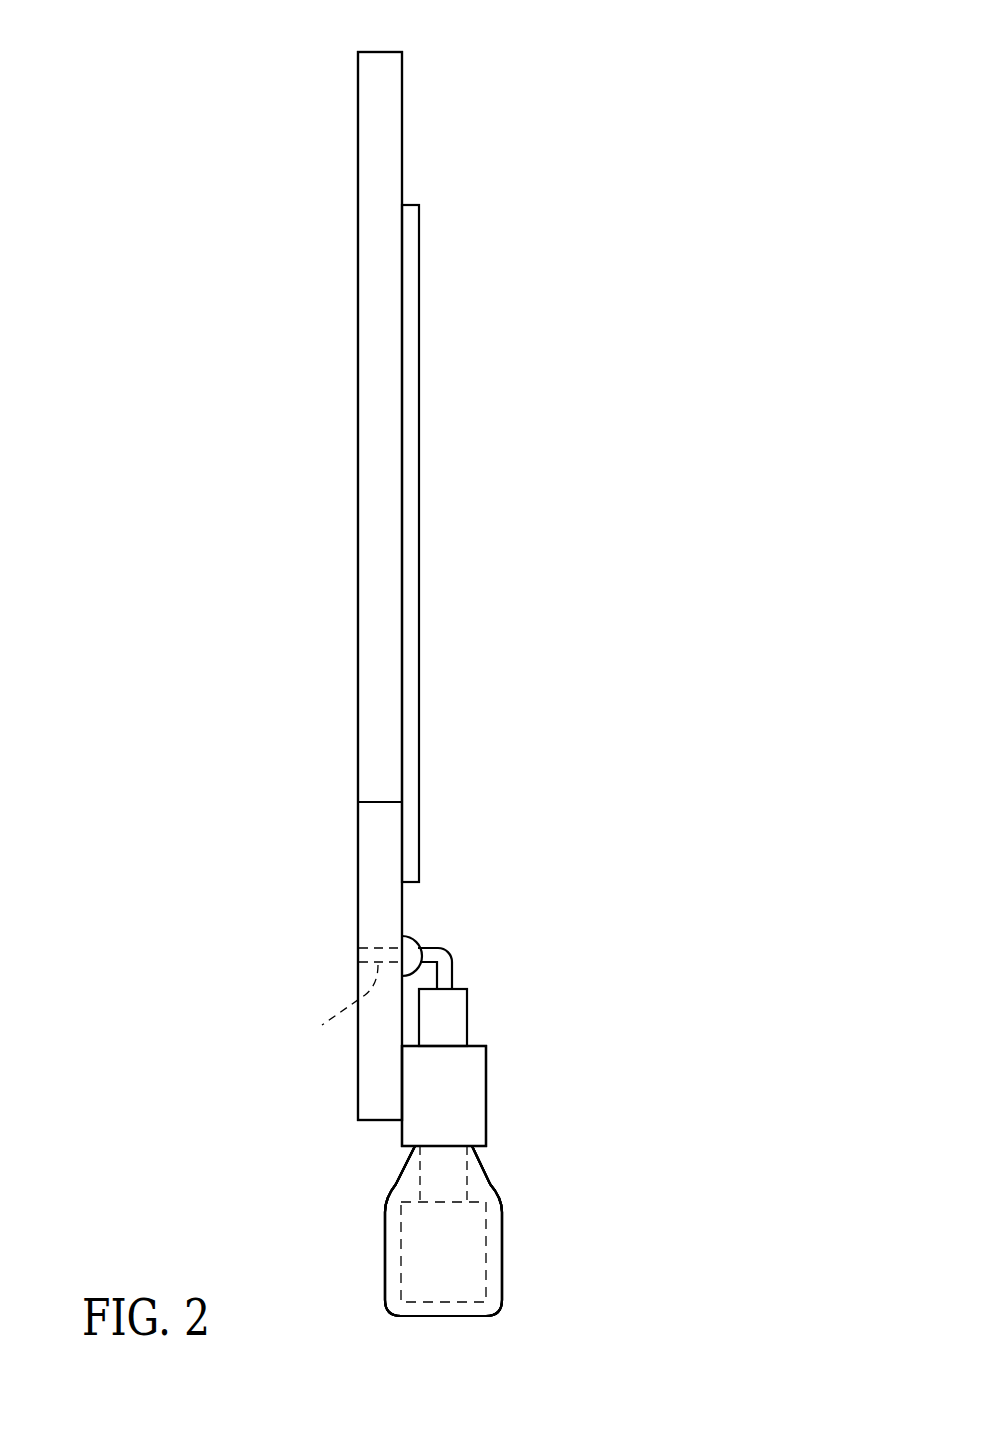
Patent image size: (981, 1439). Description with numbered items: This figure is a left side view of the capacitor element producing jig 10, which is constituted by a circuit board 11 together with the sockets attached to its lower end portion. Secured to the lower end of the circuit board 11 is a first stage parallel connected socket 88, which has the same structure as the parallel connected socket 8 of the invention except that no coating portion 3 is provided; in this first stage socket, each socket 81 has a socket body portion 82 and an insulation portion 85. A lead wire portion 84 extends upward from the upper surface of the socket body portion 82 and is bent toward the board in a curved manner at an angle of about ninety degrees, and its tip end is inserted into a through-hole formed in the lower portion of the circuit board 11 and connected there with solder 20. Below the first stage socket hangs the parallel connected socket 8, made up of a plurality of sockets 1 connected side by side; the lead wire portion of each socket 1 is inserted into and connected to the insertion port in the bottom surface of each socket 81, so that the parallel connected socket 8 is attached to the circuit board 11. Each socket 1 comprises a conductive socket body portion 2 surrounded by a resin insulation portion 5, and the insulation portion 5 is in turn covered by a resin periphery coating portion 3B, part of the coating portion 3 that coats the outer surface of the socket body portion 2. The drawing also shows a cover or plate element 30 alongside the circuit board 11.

The capacitor element producing jig 10 is at (523, 78).
The circuit board 11 is at (370, 108).
The cover 30 is at (410, 417).
The solder 20 is at (412, 938).
The lead wire portion 84 is at (453, 970).
The socket body portion 82 is at (457, 1013).
The insulation portion 85 is at (472, 1070).
The parallel connected socket 88 is at (467, 1093).
The socket 81 is at (533, 1096).
The periphery coating portion 3B is at (481, 1185).
The coating portion 3 is at (527, 1231).
The socket body portion 2 is at (440, 1176).
The insulation portion 5 is at (430, 1244).
The parallel connected socket 8 is at (465, 1247).
The socket 1 is at (503, 1231).